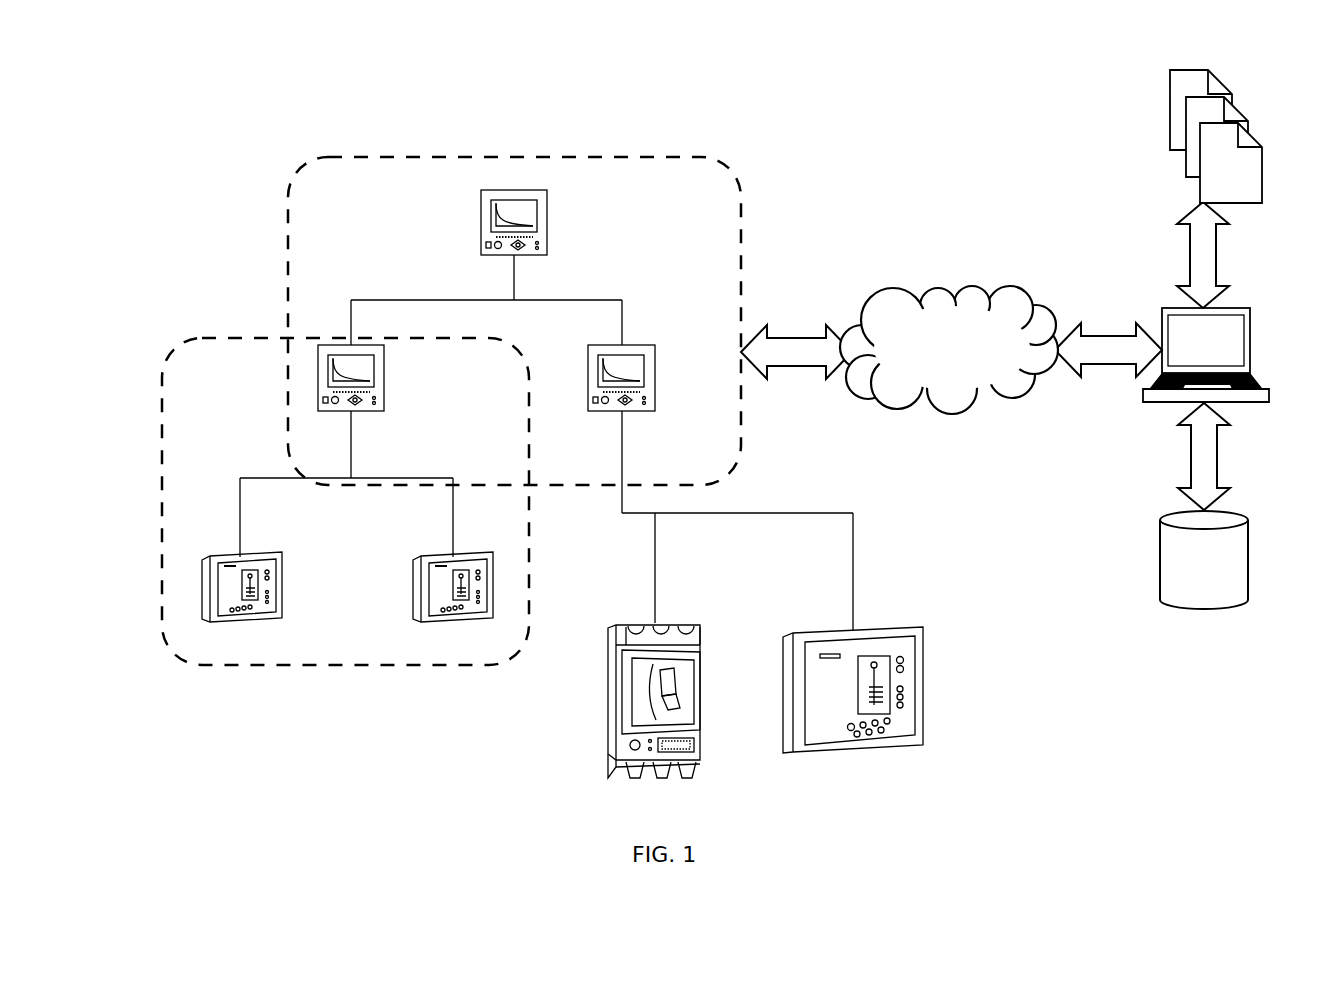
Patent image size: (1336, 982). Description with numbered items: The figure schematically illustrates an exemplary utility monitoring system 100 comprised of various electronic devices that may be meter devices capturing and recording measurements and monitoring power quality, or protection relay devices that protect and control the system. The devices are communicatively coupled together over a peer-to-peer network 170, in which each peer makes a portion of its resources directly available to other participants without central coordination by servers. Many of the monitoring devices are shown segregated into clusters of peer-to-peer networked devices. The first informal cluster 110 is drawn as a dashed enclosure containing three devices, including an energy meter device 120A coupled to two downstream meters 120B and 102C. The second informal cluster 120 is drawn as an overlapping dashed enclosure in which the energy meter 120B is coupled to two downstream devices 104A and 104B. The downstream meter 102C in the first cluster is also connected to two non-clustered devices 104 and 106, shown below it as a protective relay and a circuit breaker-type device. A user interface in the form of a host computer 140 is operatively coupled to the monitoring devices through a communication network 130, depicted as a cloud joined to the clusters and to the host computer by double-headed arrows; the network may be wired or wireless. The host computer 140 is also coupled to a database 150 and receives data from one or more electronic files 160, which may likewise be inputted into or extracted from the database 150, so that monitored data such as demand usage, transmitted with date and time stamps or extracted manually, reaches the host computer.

The utility monitoring system 100 is at (876, 164).
The first informal cluster 110 is at (286, 270).
The second informal cluster 120 is at (160, 483).
The intelligent electronic device 120A is at (548, 227).
The intelligent electronic device 120B is at (386, 400).
The downstream meter 102C is at (658, 390).
The downstream device 104A is at (282, 590).
The downstream device 104B is at (413, 598).
The non-clustered device 104 is at (922, 680).
The non-clustered device 106 is at (612, 685).
The communication network 130 is at (940, 290).
The host computer 140 is at (1252, 353).
The database 150 is at (1158, 562).
The electronic files 160 is at (1168, 127).
The peer-to-peer network 170 is at (759, 260).